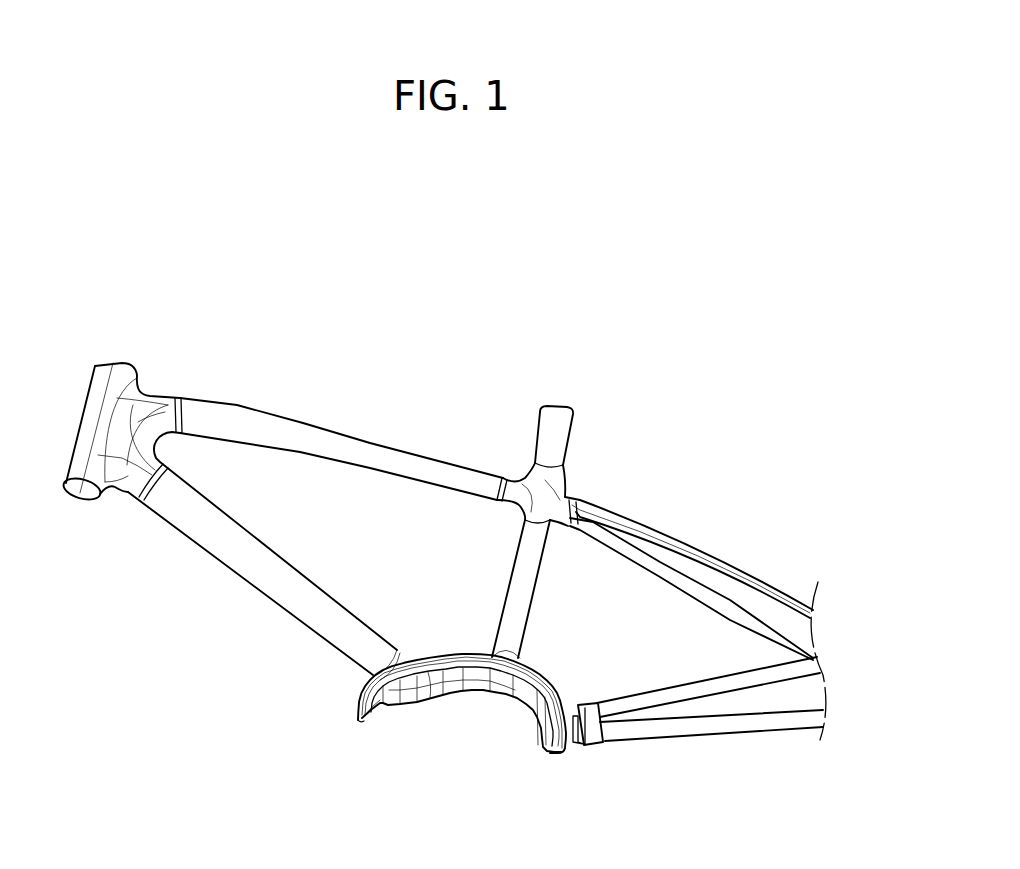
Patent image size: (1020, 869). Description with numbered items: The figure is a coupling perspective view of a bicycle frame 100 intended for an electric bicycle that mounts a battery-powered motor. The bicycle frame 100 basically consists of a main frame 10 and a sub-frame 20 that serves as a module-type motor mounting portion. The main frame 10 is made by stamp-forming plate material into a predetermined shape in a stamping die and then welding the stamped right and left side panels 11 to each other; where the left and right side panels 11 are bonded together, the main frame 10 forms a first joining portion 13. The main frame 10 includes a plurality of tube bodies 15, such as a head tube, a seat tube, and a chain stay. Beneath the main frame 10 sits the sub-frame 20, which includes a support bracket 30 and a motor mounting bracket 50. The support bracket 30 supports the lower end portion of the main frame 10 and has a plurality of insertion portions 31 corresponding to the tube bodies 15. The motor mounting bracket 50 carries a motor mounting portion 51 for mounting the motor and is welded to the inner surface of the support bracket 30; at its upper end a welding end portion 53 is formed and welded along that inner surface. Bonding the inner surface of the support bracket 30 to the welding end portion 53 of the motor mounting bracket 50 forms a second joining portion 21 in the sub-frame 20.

The bicycle frame 100 is at (430, 332).
The main frame 10 is at (623, 437).
The side panels 11 is at (257, 577).
The first joining portion 13 is at (212, 555).
The tube bodies 15 is at (290, 625).
The sub-frame 20 is at (535, 803).
The second joining portion 21 is at (400, 707).
The support bracket 30 is at (521, 679).
The insertion portions 31 is at (404, 658).
The motor mounting bracket 50 is at (531, 735).
The motor mounting portion 51 is at (447, 673).
The welding end portion 53 is at (382, 713).